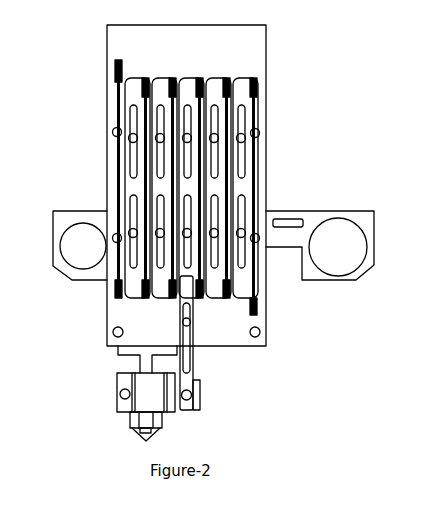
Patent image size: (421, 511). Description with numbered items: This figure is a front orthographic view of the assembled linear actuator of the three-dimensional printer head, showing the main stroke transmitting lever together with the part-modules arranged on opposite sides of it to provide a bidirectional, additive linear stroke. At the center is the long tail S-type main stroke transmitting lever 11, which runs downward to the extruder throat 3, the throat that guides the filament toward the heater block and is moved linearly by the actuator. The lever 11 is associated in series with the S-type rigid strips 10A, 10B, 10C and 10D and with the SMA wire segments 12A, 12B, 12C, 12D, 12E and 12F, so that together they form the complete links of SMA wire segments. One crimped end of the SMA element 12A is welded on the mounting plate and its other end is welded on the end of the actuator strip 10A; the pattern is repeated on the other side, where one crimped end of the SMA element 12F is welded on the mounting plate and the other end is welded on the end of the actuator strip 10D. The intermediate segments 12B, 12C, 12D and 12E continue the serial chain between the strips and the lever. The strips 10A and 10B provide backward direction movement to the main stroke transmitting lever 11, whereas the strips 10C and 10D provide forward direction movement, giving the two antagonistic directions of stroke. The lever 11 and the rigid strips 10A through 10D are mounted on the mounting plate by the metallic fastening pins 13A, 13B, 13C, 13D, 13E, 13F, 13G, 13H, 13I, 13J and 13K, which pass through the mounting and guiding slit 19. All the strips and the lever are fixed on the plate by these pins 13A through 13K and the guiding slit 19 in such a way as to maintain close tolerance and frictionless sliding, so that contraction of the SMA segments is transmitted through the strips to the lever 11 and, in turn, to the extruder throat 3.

The extruder throat 3 is at (120, 362).
The S-type rigid strip 10A is at (118, 88).
The S-type rigid strip 10B is at (145, 87).
The S-type rigid strip 10C is at (262, 336).
The S-type rigid strip 10D is at (262, 310).
The S-type long tail main stroke transmitting lever 11 is at (195, 383).
The segment of the SMA element 12A is at (131, 85).
The segment of the SMA element 12B is at (140, 178).
The segment of the SMA element 12C is at (165, 203).
The segment of the SMA element 12D is at (240, 178).
The segment of the SMA element 12E is at (255, 115).
The segment of the SMA element 12F is at (248, 170).
The fastening pin 13A is at (112, 132).
The fastening pin 13B is at (112, 236).
The fastening pin 13C is at (157, 102).
The fastening pin 13D is at (135, 262).
The fastening pin 13E is at (187, 102).
The fastening pin 13F is at (122, 302).
The fastening pin 13G is at (235, 80).
The fastening pin 13H is at (258, 292).
The fastening pin 13I is at (260, 130).
The fastening pin 13J is at (258, 240).
The fastening pin 13K is at (195, 322).
The mounting and guiding slit 19 is at (130, 110).